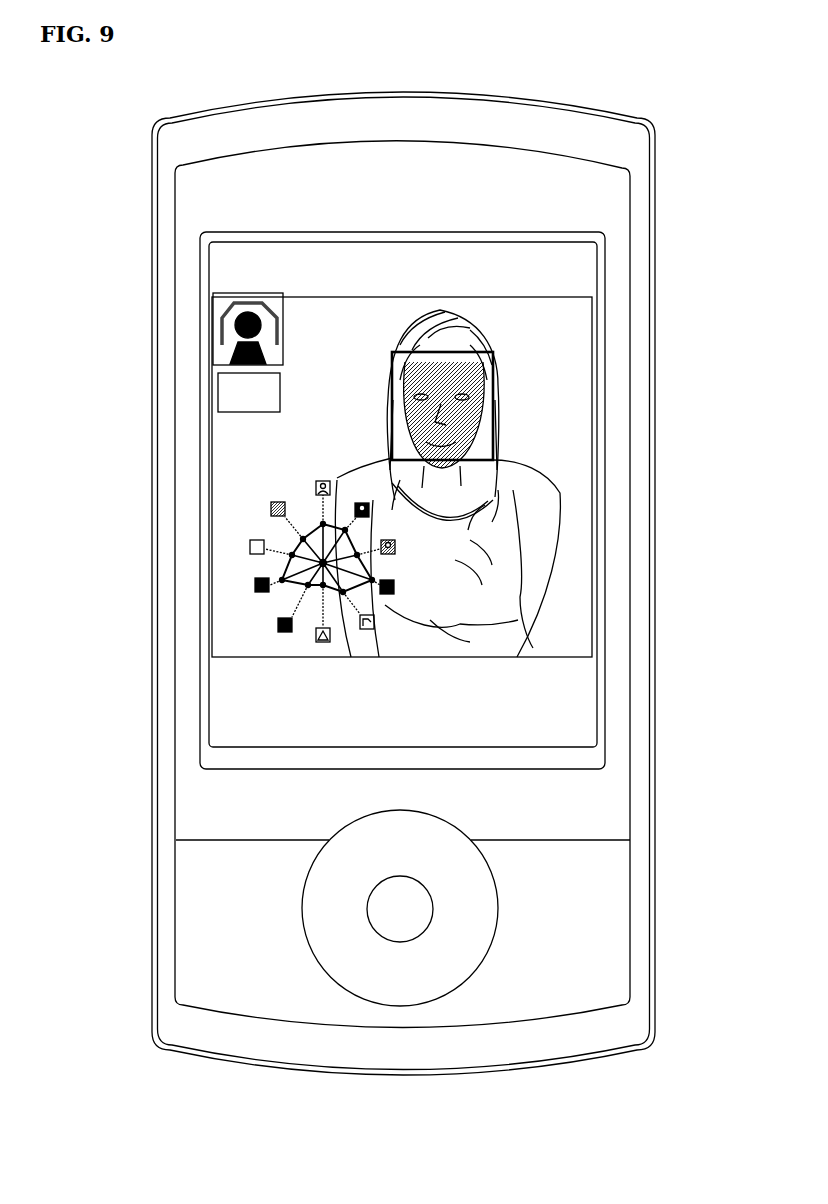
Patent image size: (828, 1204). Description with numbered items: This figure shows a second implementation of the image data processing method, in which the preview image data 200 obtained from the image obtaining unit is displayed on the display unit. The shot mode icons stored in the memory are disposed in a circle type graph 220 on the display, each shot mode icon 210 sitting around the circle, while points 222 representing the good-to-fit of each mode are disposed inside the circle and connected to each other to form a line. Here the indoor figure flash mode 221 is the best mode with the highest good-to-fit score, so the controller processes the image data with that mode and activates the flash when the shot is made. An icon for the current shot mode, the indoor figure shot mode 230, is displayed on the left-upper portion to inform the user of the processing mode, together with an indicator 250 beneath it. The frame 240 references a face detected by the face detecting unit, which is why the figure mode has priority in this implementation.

The preview image data 200 is at (575, 293).
The icon 210 is at (371, 632).
The relationship graph 220 is at (252, 576).
The indoor figure flash mode 221 is at (309, 590).
The node 222 is at (312, 521).
The indoor figure shot mode icon 230 is at (212, 295).
The frame 240 is at (493, 383).
The count display box 250 is at (223, 391).